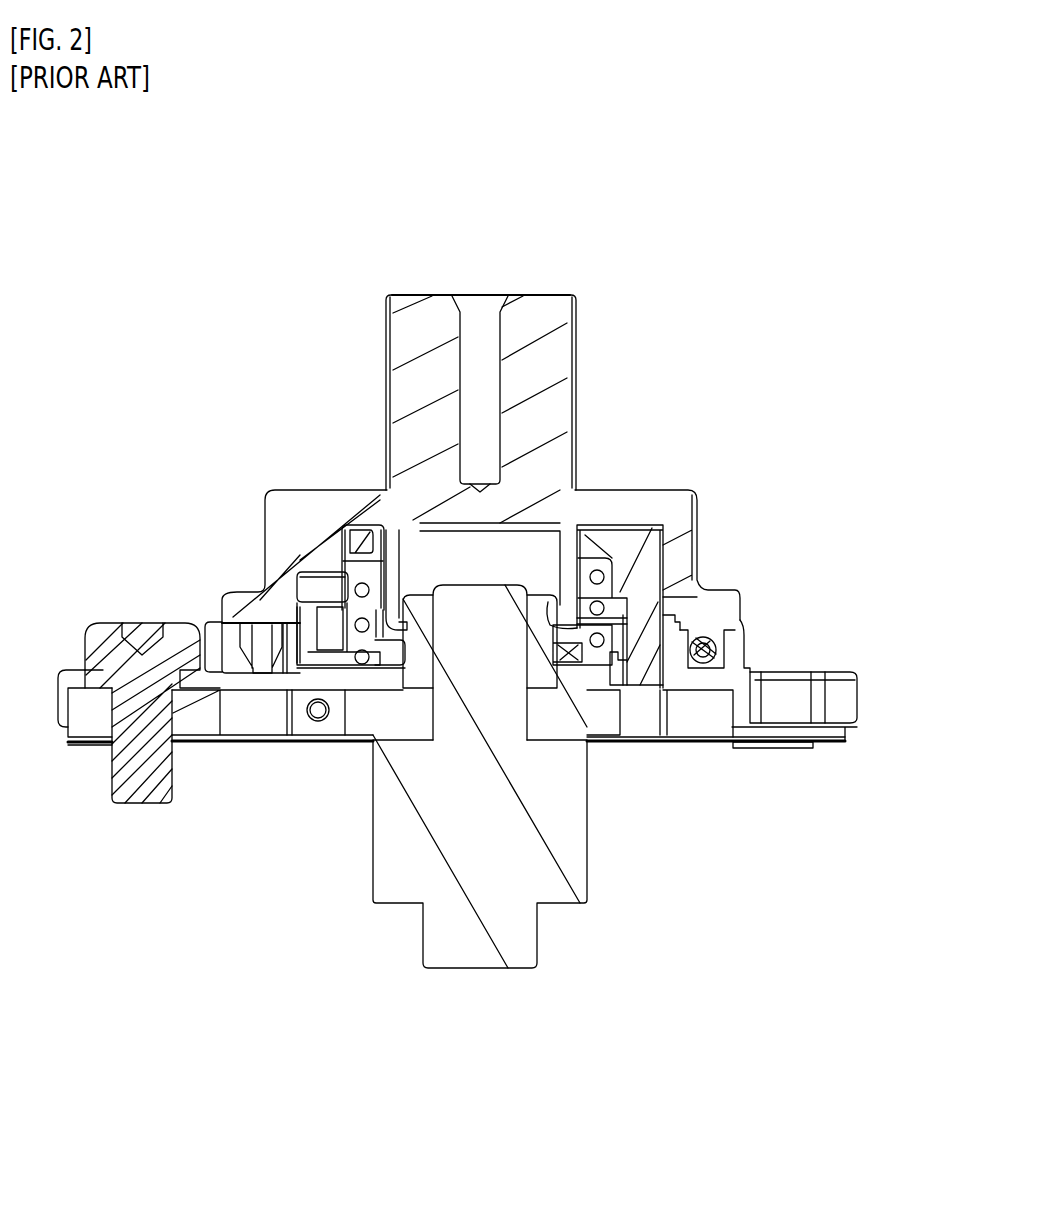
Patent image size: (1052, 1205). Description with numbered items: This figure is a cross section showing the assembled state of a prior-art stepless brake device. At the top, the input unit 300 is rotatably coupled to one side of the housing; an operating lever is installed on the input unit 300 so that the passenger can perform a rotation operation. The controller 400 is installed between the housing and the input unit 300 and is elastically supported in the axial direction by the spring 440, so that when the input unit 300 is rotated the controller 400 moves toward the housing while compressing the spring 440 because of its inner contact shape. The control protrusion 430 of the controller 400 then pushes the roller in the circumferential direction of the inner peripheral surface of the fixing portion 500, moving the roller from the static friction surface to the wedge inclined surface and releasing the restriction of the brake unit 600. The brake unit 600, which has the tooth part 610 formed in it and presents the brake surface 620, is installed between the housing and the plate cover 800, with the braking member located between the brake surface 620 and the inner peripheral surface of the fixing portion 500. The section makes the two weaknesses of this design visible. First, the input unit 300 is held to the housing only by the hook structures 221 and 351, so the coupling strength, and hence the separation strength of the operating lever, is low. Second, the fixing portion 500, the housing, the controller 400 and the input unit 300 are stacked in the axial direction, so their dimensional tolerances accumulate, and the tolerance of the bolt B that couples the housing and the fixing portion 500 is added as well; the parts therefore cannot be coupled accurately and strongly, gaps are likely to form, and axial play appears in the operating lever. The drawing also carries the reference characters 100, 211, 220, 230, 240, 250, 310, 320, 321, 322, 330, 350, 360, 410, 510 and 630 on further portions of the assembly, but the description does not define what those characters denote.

The prior art water pump 100 is at (777, 238).
The input unit 300 is at (368, 371).
The hub body 310 is at (478, 610).
The hub boss 320 is at (548, 424).
The boss top surface 321 is at (576, 302).
The center bore 322 is at (482, 383).
The hub flange leg 330 is at (272, 690).
The seal retainer 350 is at (338, 555).
The hook structure 351 is at (338, 602).
The O-ring 360 is at (722, 645).
The controller 400 is at (356, 530).
The bearing outer race 410 is at (650, 545).
The control protrusion 430 is at (658, 692).
The spring 440 is at (335, 668).
The fixing portion 500 is at (215, 715).
The base plate lip 510 is at (90, 700).
The brake unit 600 is at (492, 996).
The tooth part 610 is at (380, 848).
The brake surface 620 is at (645, 700).
The bearing balls 630 is at (637, 510).
The housing flange 211 is at (83, 677).
The housing body 220 is at (743, 655).
The hook structure 221 is at (668, 605).
The housing boss 230 is at (255, 622).
The housing inner wall 240 is at (603, 700).
The housing outlet block 250 is at (753, 688).
The plate cover 800 is at (830, 742).
The bolt B is at (135, 800).